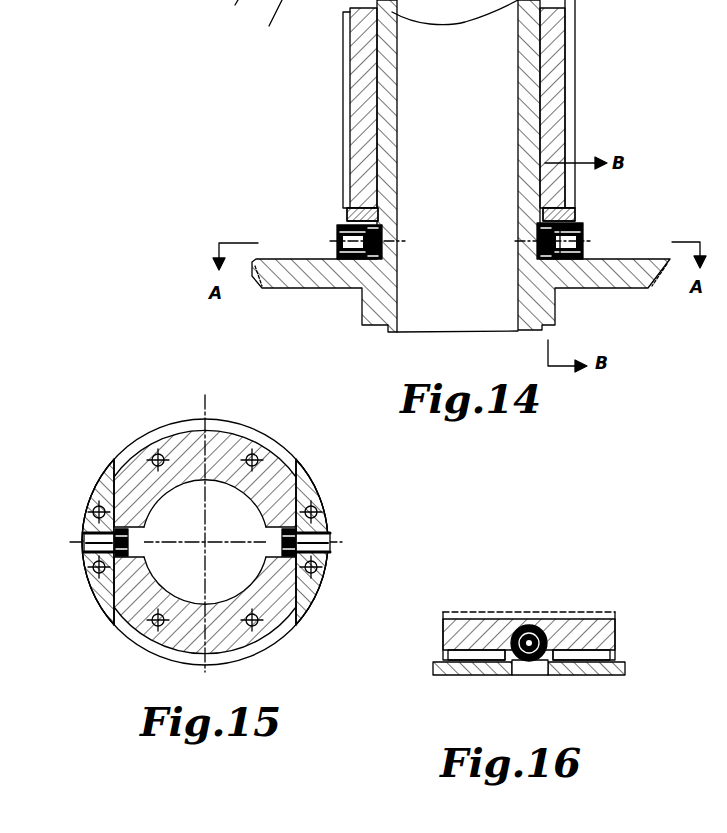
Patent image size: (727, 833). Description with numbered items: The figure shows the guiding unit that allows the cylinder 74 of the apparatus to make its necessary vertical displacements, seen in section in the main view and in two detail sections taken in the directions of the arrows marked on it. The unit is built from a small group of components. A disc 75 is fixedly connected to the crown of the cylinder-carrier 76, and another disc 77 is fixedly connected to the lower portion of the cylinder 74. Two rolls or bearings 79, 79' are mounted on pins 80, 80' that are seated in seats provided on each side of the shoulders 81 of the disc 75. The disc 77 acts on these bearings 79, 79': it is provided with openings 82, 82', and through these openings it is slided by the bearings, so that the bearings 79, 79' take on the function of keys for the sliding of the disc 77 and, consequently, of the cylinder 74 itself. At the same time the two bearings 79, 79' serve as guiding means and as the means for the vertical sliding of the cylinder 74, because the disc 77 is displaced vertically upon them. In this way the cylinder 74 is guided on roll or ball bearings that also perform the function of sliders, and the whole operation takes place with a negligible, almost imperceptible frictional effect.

In FIG. 14, the cylinder 74 is at (558, 42).
In FIG. 14, the disc 75 is at (559, 214).
In FIG. 15, the disc 75 is at (274, 432).
In FIG. 16, the disc 75 is at (452, 667).
In FIG. 14, the cylinder-carrier 76 is at (283, 275).
In FIG. 14, the disc 77 is at (346, 216).
In FIG. 15, the disc 77 is at (226, 436).
In FIG. 16, the disc 77 is at (452, 640).
In FIG. 14, the roll or bearing 79 is at (381, 227).
In FIG. 15, the roll or bearing 79 is at (97, 582).
In FIG. 14, the roll or bearing 79' is at (530, 241).
In FIG. 15, the roll or bearing 79' is at (328, 521).
In FIG. 16, the roll or bearing 79' is at (559, 602).
In FIG. 15, the pin 80 is at (86, 520).
In FIG. 15, the pin 80' is at (340, 533).
In FIG. 16, the pin 80' is at (511, 689).
In FIG. 14, the shoulder 81 is at (582, 232).
In FIG. 15, the shoulder 81 is at (105, 488).
In FIG. 16, the shoulder 81 is at (618, 652).
In FIG. 15, the opening 82 is at (111, 598).
In FIG. 15, the opening 82' is at (292, 603).